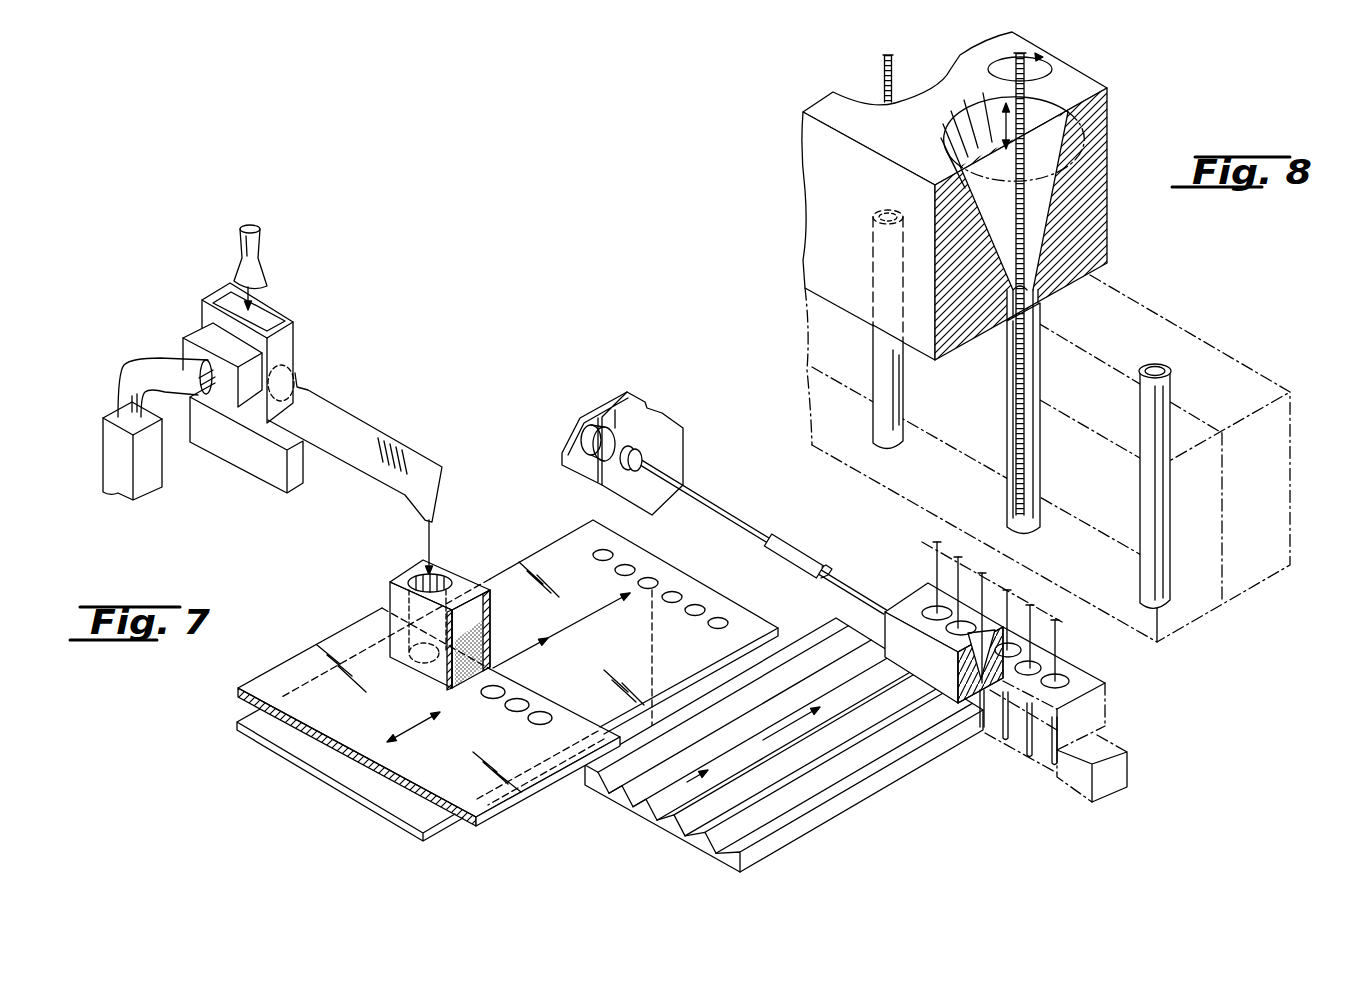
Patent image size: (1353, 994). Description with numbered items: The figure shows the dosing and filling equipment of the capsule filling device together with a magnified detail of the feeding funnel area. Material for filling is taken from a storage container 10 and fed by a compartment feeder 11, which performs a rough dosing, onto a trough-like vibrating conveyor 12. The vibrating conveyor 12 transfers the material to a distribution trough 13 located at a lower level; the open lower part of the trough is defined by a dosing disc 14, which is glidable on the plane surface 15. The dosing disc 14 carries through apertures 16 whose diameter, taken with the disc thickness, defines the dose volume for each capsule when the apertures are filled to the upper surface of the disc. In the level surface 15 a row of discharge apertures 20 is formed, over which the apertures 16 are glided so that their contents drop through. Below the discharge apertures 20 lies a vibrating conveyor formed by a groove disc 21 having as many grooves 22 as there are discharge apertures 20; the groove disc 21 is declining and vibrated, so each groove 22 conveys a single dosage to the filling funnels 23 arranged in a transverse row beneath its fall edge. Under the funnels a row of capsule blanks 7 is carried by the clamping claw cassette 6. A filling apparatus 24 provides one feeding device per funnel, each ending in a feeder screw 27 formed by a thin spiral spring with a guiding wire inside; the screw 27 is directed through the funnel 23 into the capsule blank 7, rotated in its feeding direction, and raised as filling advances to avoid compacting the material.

In FIG. 7, the clamping claw cassette 6 is at (1133, 773).
In FIG. 8, the clamping claw cassette 6 is at (1208, 338).
In FIG. 7, the capsule blank 7 is at (1005, 697).
In FIG. 8, the capsule blank 7 is at (891, 445).
In FIG. 7, the storage container 10 is at (270, 318).
In FIG. 7, the compartment feeder 11 is at (282, 376).
In FIG. 7, the vibrating conveyor 12 is at (334, 416).
In FIG. 7, the distribution trough 13 is at (452, 588).
In FIG. 7, the dosing disc 14 is at (353, 635).
In FIG. 7, the plane surface 15 is at (557, 566).
In FIG. 7, the dosing apertures 16 is at (542, 719).
In FIG. 7, the discharge apertures 20 is at (649, 583).
In FIG. 7, the groove disc 21 is at (808, 823).
In FIG. 7, the grooves 22 is at (690, 835).
In FIG. 7, the filling funnels 23 is at (926, 608).
In FIG. 8, the filling funnels 23 is at (1050, 107).
In FIG. 7, the filling apparatus 24 is at (486, 258).
In FIG. 7, the feeder screw 27 is at (959, 560).
In FIG. 8, the feeder screw 27 is at (883, 75).